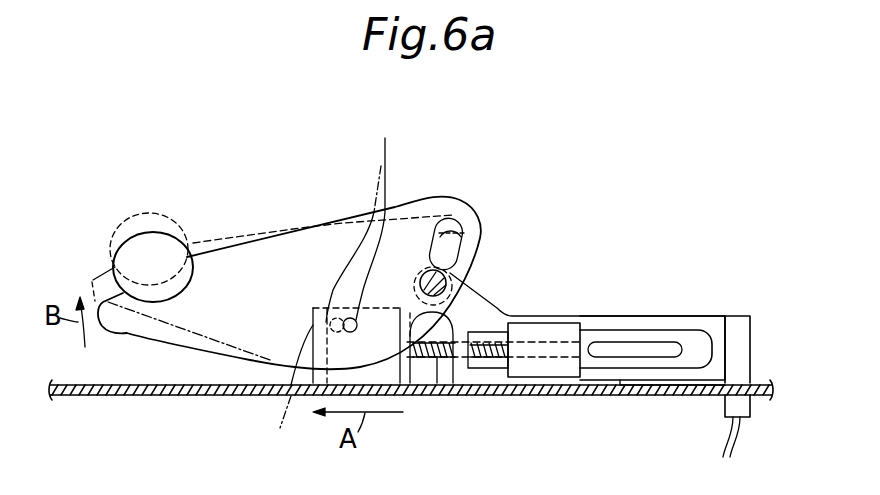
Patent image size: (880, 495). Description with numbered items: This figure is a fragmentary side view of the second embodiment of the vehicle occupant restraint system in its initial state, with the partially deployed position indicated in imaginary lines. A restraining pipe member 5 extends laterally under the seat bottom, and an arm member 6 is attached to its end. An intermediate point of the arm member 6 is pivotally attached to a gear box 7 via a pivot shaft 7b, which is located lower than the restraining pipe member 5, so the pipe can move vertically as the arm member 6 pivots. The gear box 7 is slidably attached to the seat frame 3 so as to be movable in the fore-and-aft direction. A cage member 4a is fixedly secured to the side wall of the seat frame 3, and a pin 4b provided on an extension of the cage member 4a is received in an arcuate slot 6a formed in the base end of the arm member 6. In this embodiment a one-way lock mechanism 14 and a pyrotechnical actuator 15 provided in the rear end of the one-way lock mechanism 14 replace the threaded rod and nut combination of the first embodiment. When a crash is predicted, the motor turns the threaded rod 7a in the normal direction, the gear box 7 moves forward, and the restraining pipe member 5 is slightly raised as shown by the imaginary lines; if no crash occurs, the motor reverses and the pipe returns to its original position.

The seat frame 3 is at (743, 362).
The cage member 4a is at (618, 316).
The pin 4b is at (460, 265).
The restraining pipe member 5 is at (143, 213).
The arm member 6 is at (243, 243).
The arcuate slot 6a is at (457, 217).
The gear box 7 is at (312, 388).
The threaded rod 7a is at (437, 393).
The pivot shaft 7b is at (365, 217).
The one-way lock mechanism 14 is at (538, 326).
The pyrotechnical actuator 15 is at (672, 331).